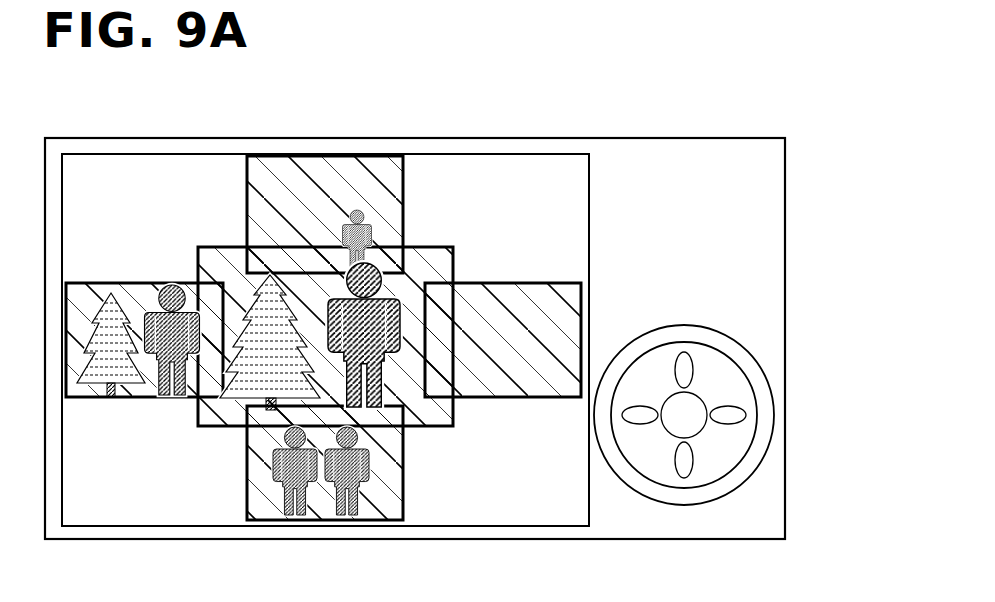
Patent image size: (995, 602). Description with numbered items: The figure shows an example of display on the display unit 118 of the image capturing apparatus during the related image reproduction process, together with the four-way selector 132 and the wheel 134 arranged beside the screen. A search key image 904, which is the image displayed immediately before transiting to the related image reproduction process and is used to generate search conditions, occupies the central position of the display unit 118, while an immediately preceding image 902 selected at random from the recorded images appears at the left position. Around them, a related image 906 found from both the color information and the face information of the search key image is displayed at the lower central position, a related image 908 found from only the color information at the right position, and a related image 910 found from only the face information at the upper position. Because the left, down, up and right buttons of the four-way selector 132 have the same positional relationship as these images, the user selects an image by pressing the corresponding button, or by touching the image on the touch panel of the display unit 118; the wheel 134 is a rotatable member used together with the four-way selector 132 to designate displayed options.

The display unit 118 is at (110, 492).
The 4-way selector 132 is at (732, 410).
The wheel 134 is at (732, 361).
The immediately preceding image 902 is at (96, 283).
The search key image 904 is at (432, 247).
The related image 906 is at (247, 480).
The related image 908 is at (543, 283).
The related image 910 is at (247, 192).